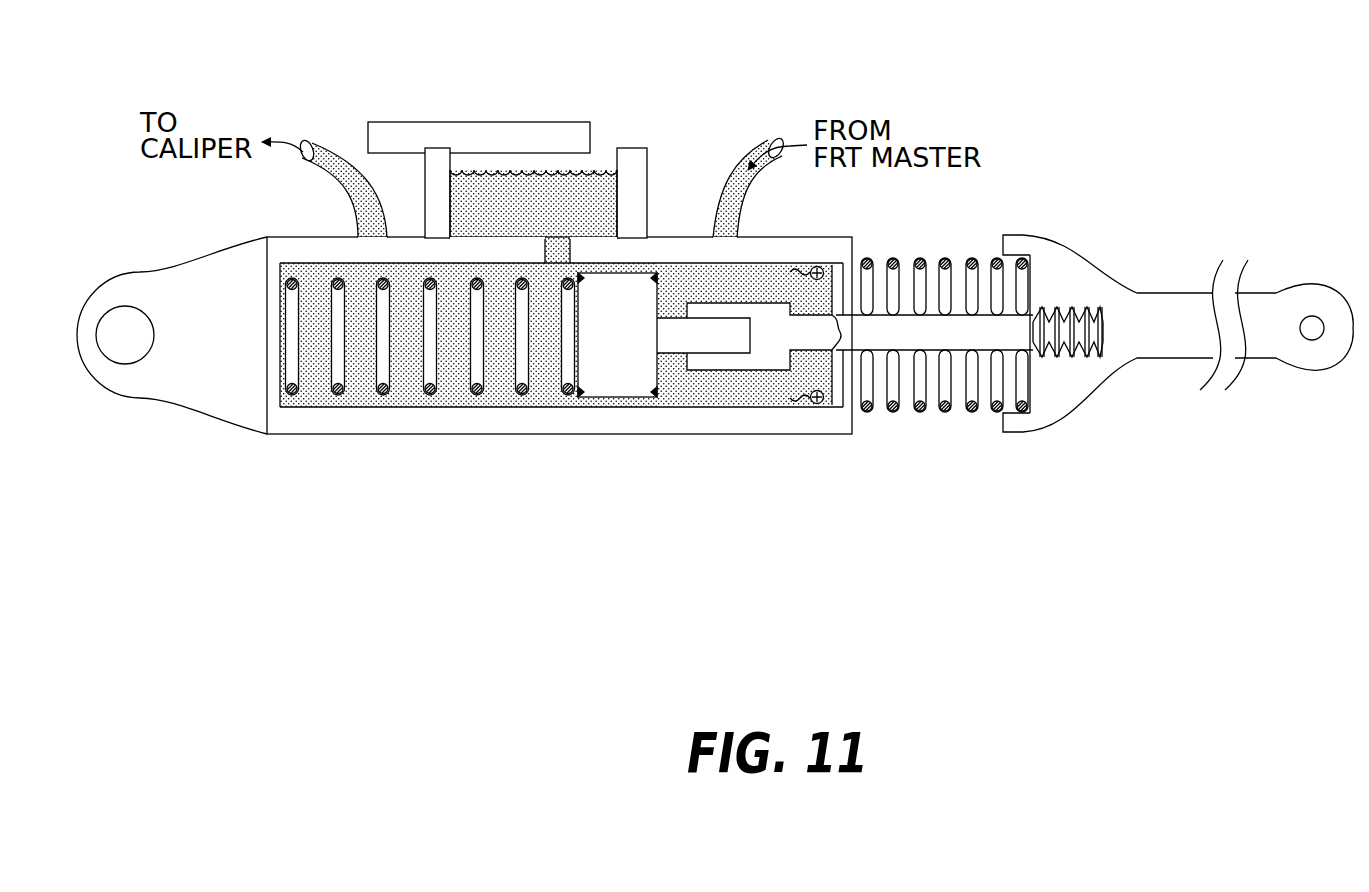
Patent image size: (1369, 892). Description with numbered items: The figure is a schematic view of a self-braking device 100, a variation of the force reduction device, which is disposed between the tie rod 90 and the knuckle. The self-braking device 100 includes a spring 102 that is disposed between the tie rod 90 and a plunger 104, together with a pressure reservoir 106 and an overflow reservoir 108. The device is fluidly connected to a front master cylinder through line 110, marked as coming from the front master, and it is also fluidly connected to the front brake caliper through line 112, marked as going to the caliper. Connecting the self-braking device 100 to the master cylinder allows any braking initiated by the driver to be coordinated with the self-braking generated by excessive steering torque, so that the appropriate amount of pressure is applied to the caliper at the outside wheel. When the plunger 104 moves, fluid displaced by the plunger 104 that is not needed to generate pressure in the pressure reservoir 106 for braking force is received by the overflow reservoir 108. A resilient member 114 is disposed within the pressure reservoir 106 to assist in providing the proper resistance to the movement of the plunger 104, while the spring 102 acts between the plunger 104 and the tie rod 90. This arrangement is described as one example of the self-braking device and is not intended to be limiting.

The self-braking device 100 is at (877, 90).
The spring 102 is at (933, 419).
The plunger 104 is at (741, 392).
The pressure reservoir 106 is at (405, 375).
The overflow reservoir 108 is at (610, 198).
The line 110 is at (730, 200).
The line 112 is at (360, 191).
The resilient member 114 is at (527, 390).
The tie rod 90 is at (1273, 360).